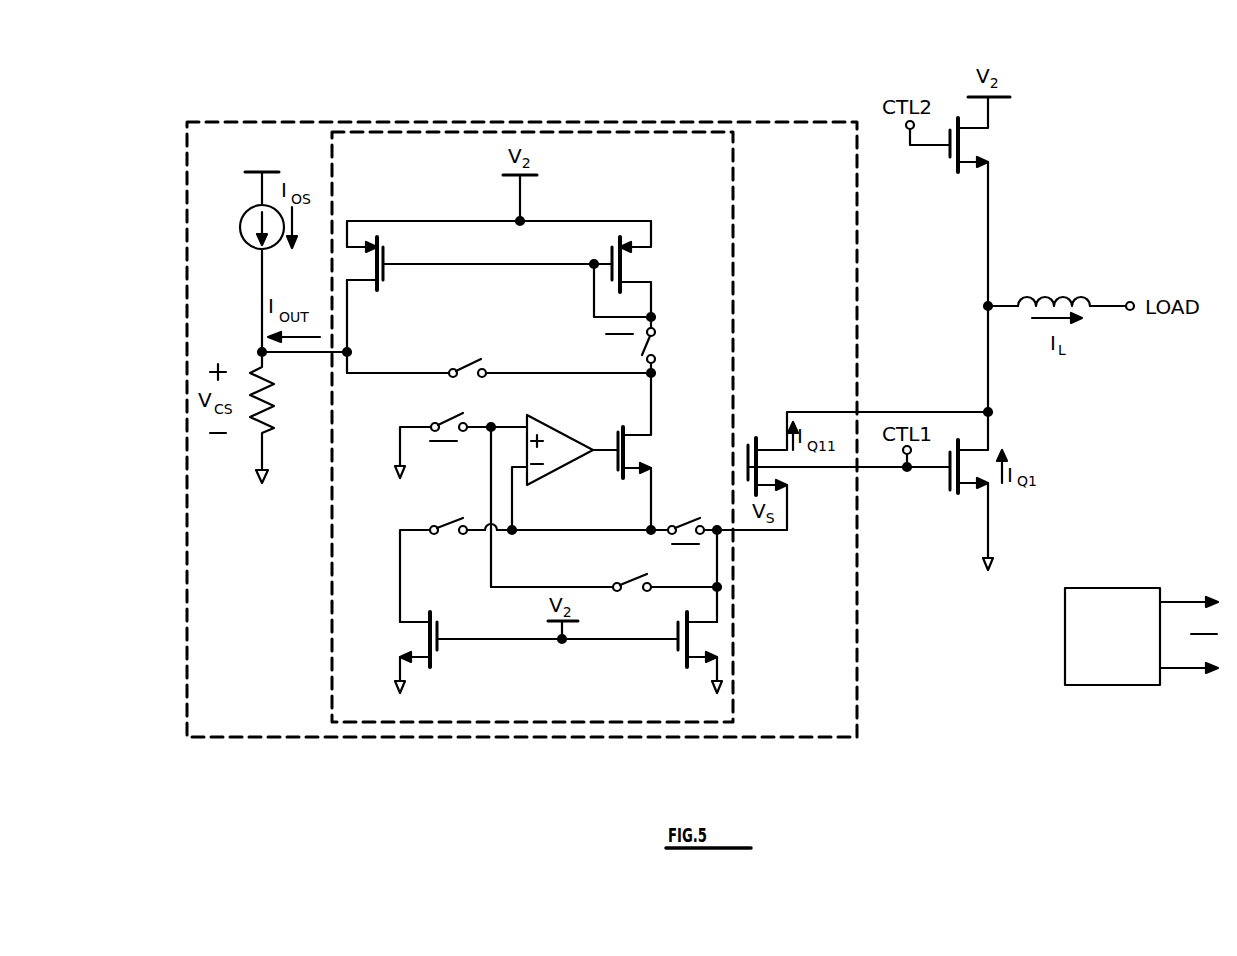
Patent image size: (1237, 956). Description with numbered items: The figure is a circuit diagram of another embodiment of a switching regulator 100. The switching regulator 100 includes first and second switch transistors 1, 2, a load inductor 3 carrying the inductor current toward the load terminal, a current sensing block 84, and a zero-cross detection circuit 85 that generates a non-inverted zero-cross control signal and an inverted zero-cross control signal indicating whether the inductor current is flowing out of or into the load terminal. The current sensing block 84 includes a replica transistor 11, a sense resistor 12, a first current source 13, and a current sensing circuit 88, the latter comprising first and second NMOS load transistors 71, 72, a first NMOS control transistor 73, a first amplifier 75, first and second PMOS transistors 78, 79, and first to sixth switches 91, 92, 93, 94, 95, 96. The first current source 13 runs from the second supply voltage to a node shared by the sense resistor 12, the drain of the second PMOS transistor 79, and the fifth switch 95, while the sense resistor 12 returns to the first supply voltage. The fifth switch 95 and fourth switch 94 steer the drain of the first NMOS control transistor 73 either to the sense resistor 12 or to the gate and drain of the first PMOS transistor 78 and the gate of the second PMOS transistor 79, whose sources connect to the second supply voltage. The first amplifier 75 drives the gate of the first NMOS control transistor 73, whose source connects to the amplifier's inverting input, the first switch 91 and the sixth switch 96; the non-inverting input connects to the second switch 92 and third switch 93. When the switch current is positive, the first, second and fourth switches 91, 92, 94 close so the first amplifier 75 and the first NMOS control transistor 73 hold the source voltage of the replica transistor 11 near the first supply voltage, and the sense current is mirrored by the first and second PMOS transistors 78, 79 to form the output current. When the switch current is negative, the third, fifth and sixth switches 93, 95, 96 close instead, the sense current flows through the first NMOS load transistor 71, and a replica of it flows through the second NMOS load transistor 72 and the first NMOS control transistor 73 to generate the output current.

The switching regulator 100 is at (1113, 223).
The first switch transistor 1 is at (947, 478).
The second switch transistor 2 is at (947, 152).
The load inductor 3 is at (1066, 297).
The replica transistor 11 is at (748, 456).
The sense resistor 12 is at (275, 399).
The first current source 13 is at (244, 210).
The first NMOS load transistor 71 is at (680, 654).
The second NMOS load transistor 72 is at (440, 650).
The first NMOS control transistor 73 is at (627, 456).
The first amplifier 75 is at (556, 477).
The first PMOS transistor 78 is at (624, 276).
The second PMOS transistor 79 is at (381, 291).
The current sensing block 84 is at (232, 122).
The zero-cross detection circuit 85 is at (1105, 588).
The current sensing circuit 88 is at (733, 168).
The first switch 91 is at (670, 502).
The second switch 92 is at (446, 418).
The third switch 93 is at (612, 579).
The fourth switch 94 is at (648, 346).
The fifth switch 95 is at (447, 366).
The sixth switch 96 is at (444, 522).